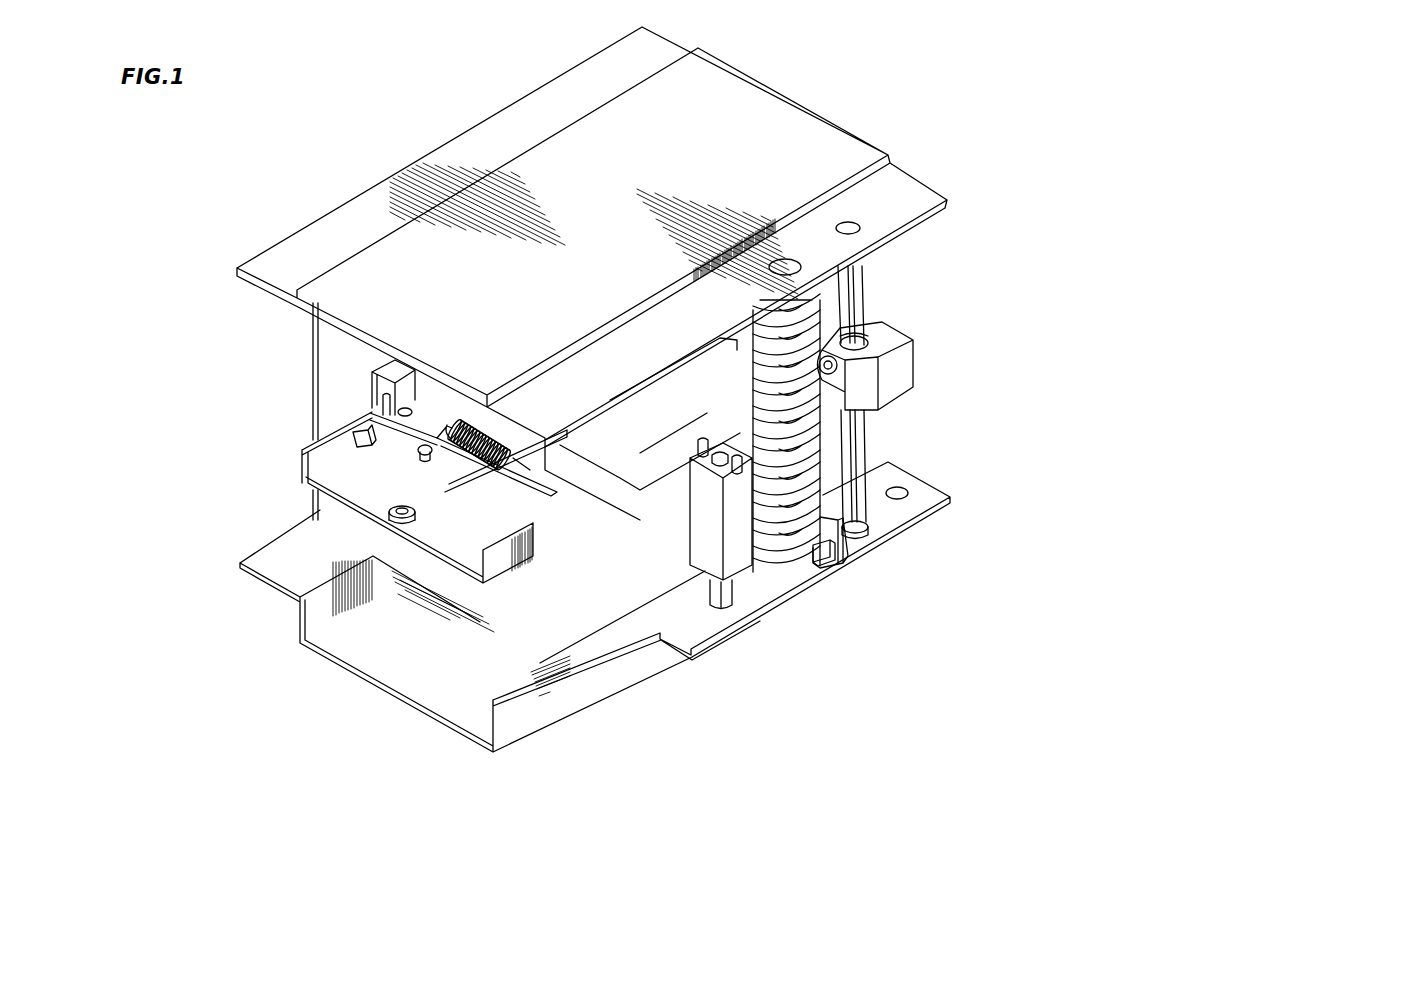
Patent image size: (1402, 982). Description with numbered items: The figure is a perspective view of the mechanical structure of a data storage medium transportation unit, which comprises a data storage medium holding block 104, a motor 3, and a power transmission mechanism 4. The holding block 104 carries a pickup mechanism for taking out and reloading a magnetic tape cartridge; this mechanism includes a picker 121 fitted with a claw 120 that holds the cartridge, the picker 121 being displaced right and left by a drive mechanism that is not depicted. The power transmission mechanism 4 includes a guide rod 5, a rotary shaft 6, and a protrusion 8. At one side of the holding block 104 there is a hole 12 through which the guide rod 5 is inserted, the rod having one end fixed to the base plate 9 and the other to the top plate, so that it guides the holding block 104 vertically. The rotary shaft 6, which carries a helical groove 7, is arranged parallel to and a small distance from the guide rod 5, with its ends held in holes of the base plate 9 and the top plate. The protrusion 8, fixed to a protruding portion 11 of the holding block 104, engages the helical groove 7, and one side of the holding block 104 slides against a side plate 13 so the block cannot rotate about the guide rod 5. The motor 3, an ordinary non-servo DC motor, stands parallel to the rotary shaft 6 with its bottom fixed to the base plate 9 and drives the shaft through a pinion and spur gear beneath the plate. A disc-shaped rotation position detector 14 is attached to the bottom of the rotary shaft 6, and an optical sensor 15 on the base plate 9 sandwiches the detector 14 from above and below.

The motor 3 is at (740, 570).
The power transmission mechanism 4 is at (1178, 653).
The guide rod 5 is at (850, 280).
The rotary shaft 6 is at (807, 312).
The helical groove 7 is at (820, 457).
The protrusion 8 is at (833, 374).
The base plate 9 is at (420, 683).
The protruding portion 11 is at (908, 373).
The hole 12 is at (868, 332).
The side plate 13 is at (340, 335).
The rotation position detector 14 is at (795, 568).
The optical sensor 15 is at (843, 562).
The data storage medium holding block 104 is at (557, 530).
The claw 120 is at (352, 438).
The picker 121 is at (383, 442).